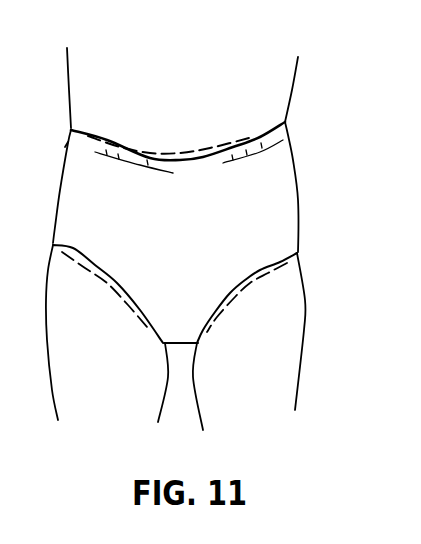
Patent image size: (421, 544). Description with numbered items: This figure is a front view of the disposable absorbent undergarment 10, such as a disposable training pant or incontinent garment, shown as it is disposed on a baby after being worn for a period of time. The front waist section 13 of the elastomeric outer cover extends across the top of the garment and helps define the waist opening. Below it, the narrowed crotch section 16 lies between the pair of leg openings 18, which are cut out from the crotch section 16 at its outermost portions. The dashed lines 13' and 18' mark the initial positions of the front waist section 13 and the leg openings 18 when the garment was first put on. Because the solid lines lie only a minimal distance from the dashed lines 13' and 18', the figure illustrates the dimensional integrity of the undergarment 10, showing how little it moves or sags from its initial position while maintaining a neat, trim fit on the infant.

The disposable absorbent undergarment 10 is at (333, 102).
The front waist section 13 is at (178, 177).
The initial waist position 13' is at (170, 113).
The crotch section 16 is at (181, 351).
The leg opening 18 is at (247, 315).
The initial leg opening position 18' is at (108, 306).